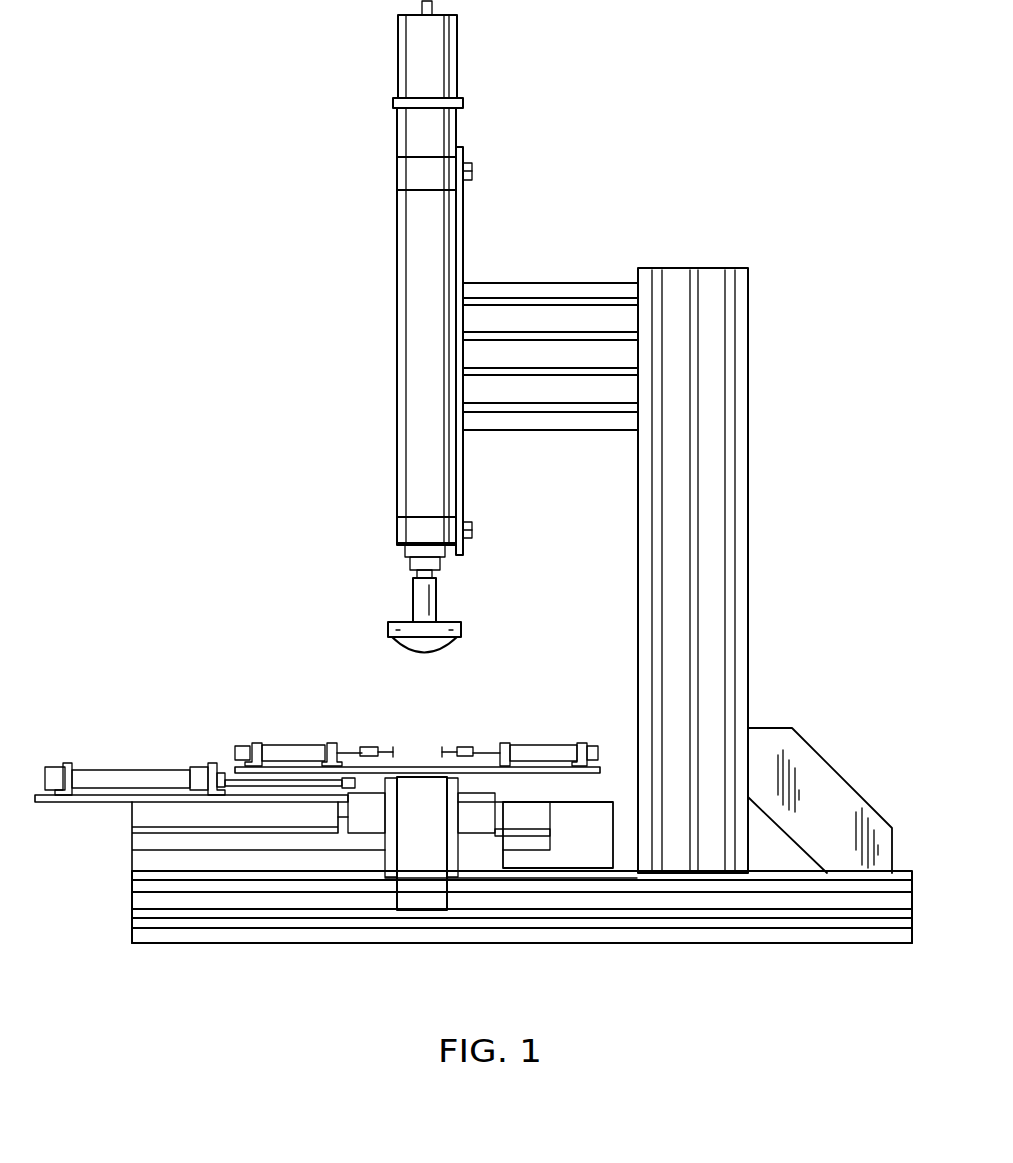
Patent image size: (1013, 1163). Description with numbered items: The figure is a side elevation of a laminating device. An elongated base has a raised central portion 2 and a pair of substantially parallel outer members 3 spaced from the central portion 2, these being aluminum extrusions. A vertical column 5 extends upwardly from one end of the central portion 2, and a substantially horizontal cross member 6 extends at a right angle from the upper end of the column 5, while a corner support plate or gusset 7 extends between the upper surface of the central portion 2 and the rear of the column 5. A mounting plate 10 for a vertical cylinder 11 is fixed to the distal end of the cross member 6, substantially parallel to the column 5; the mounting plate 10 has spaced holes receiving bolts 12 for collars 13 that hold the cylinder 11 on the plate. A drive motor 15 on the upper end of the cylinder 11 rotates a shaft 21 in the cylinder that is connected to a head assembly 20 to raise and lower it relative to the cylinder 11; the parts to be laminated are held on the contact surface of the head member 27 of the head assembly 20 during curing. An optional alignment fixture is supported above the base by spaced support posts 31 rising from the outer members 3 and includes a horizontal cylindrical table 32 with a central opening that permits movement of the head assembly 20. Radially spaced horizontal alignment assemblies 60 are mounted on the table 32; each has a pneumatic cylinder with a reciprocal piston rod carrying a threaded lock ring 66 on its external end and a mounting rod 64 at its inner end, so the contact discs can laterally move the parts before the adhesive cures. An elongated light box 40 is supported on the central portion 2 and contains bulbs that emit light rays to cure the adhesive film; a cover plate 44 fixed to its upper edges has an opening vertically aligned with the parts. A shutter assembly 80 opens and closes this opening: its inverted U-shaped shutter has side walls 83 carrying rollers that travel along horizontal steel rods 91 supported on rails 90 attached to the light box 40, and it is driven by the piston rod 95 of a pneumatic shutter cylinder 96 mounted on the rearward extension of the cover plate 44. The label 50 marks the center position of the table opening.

The raised central portion 2 is at (145, 893).
The outer members 3 is at (160, 943).
The vertical column 5 is at (748, 492).
The cross member 6 is at (540, 287).
The corner support plate or gusset 7 is at (815, 752).
The mounting plate 10 is at (463, 238).
The vertical cylinder 11 is at (415, 283).
The bolts 12 is at (472, 165).
The collars 13 is at (410, 172).
The drive motor 15 is at (445, 65).
The head assembly 20 is at (412, 598).
The shaft 21 is at (432, 576).
The head member 27 is at (461, 628).
The support posts 31 is at (420, 905).
The cylindrical table 32 is at (243, 767).
The light box 40 is at (607, 852).
The cover plate 44 is at (605, 802).
The center position 50 is at (423, 772).
The alignment assemblies 60 is at (298, 742).
The mounting rod 64 is at (375, 748).
The threaded lock ring 66 is at (243, 745).
The shutter assembly 80 is at (483, 836).
The side walls 83 is at (343, 817).
The rails 90 is at (537, 845).
The steel rods 91 is at (150, 833).
The piston rod 95 is at (232, 780).
The pneumatic shutter cylinder 96 is at (100, 768).